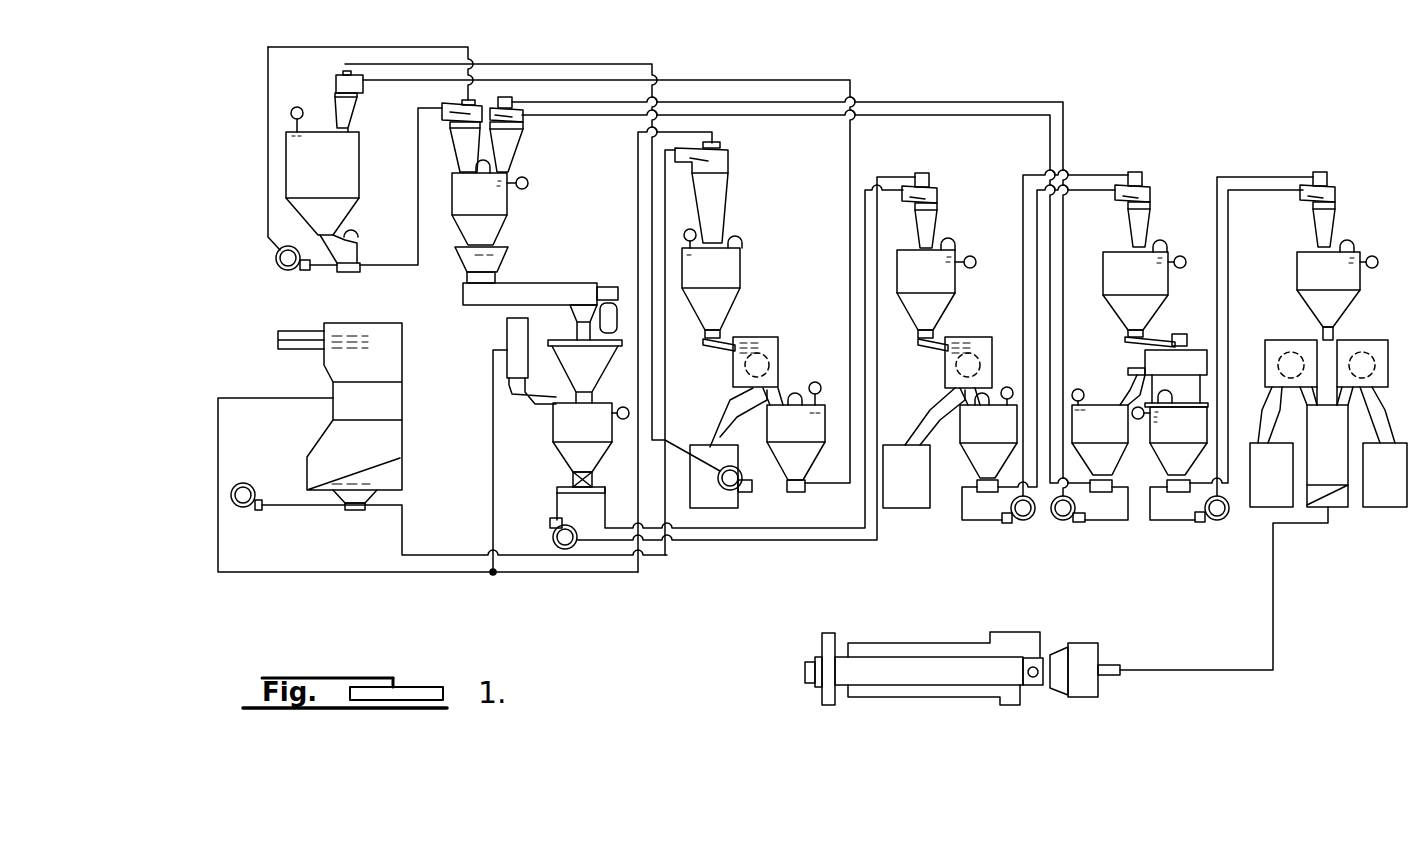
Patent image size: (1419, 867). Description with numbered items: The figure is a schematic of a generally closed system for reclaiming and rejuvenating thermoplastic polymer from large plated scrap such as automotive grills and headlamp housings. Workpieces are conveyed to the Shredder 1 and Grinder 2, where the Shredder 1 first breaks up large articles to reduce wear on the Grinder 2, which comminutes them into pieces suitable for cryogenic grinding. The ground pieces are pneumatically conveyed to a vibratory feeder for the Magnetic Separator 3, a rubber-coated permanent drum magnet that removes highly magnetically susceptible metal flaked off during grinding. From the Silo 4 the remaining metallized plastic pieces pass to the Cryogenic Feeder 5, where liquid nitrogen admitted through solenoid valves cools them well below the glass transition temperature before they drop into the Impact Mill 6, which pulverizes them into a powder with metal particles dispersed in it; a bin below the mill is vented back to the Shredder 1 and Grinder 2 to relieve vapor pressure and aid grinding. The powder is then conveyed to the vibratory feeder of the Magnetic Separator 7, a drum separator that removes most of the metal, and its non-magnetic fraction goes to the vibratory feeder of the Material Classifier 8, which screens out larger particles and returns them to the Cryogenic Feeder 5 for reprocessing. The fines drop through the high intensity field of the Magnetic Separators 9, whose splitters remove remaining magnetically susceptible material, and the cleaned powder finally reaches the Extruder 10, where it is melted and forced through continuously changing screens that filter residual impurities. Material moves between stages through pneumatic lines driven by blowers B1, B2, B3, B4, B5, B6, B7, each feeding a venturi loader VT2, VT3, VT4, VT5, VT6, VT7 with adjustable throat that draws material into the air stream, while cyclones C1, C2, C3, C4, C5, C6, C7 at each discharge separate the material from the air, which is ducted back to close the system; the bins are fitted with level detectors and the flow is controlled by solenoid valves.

The shredder 1 is at (380, 405).
The grinder 2 is at (330, 447).
The magnetic separator 3 is at (782, 345).
The silo 4 is at (296, 166).
The cryogenic feeder 5 is at (546, 295).
The impact mill 6 is at (553, 352).
The magnetic separator 7 is at (951, 398).
The material classifier 8 is at (1207, 266).
The magnetic separators 9 is at (1350, 385).
The extruder 10 is at (1205, 418).
The cyclone C1 is at (722, 172).
The cyclone C2 is at (466, 148).
The cyclone C3 is at (510, 138).
The cyclone C4 is at (930, 207).
The cyclone C5 is at (1148, 210).
The cyclone C6 is at (1312, 212).
The cyclone C7 is at (340, 103).
The blower B1 is at (243, 507).
The blower B2 is at (730, 490).
The blower B3 is at (565, 550).
The blower B4 is at (1023, 521).
The blower B5 is at (1065, 521).
The blower B6 is at (1217, 521).
The blower B7 is at (293, 258).
The venturi loader VT2 is at (795, 492).
The venturi loader VT3 is at (570, 491).
The venturi loader VT4 is at (988, 493).
The venturi loader VT5 is at (1110, 489).
The venturi loader VT6 is at (1177, 492).
The venturi loader VT7 is at (348, 272).